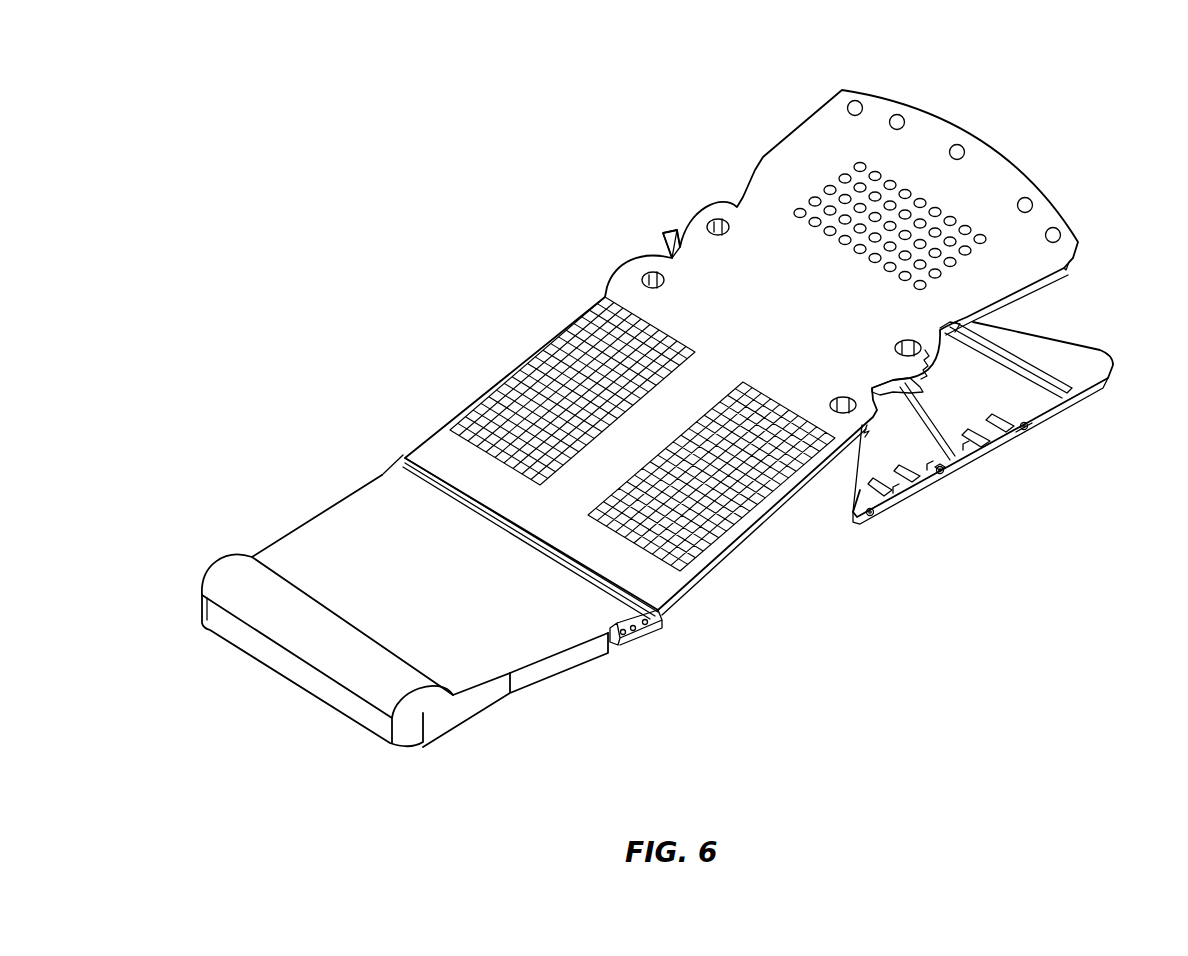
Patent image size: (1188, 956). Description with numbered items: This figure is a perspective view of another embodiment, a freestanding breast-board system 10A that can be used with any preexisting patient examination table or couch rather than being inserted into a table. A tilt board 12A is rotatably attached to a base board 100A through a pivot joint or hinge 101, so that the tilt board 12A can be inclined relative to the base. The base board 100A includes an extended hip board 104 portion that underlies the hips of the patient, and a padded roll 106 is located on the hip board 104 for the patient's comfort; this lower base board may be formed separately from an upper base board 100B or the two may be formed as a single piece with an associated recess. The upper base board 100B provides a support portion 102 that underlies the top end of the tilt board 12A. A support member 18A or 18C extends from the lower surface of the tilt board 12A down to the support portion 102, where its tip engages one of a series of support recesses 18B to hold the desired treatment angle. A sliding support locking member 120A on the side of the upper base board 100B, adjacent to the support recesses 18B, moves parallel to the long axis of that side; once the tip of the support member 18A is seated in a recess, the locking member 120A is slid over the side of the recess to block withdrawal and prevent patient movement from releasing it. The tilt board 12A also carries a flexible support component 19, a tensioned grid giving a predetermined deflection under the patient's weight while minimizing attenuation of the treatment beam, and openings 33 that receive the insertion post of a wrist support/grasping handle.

The breast-board system 10A is at (450, 177).
The tilt board 12A is at (787, 150).
The opening 33 is at (905, 118).
The support member 18C is at (670, 232).
The flexible support component 19 is at (530, 352).
The support portion 102 is at (1050, 328).
The support member 18A is at (948, 465).
The upper base board 100B is at (877, 450).
The support locking member 120A is at (975, 452).
The support recess 18B is at (1035, 418).
The base board 100A is at (552, 668).
The hip board 104 is at (345, 538).
The padded roll 106 is at (315, 637).
The pivot joint or hinge 101 is at (648, 620).